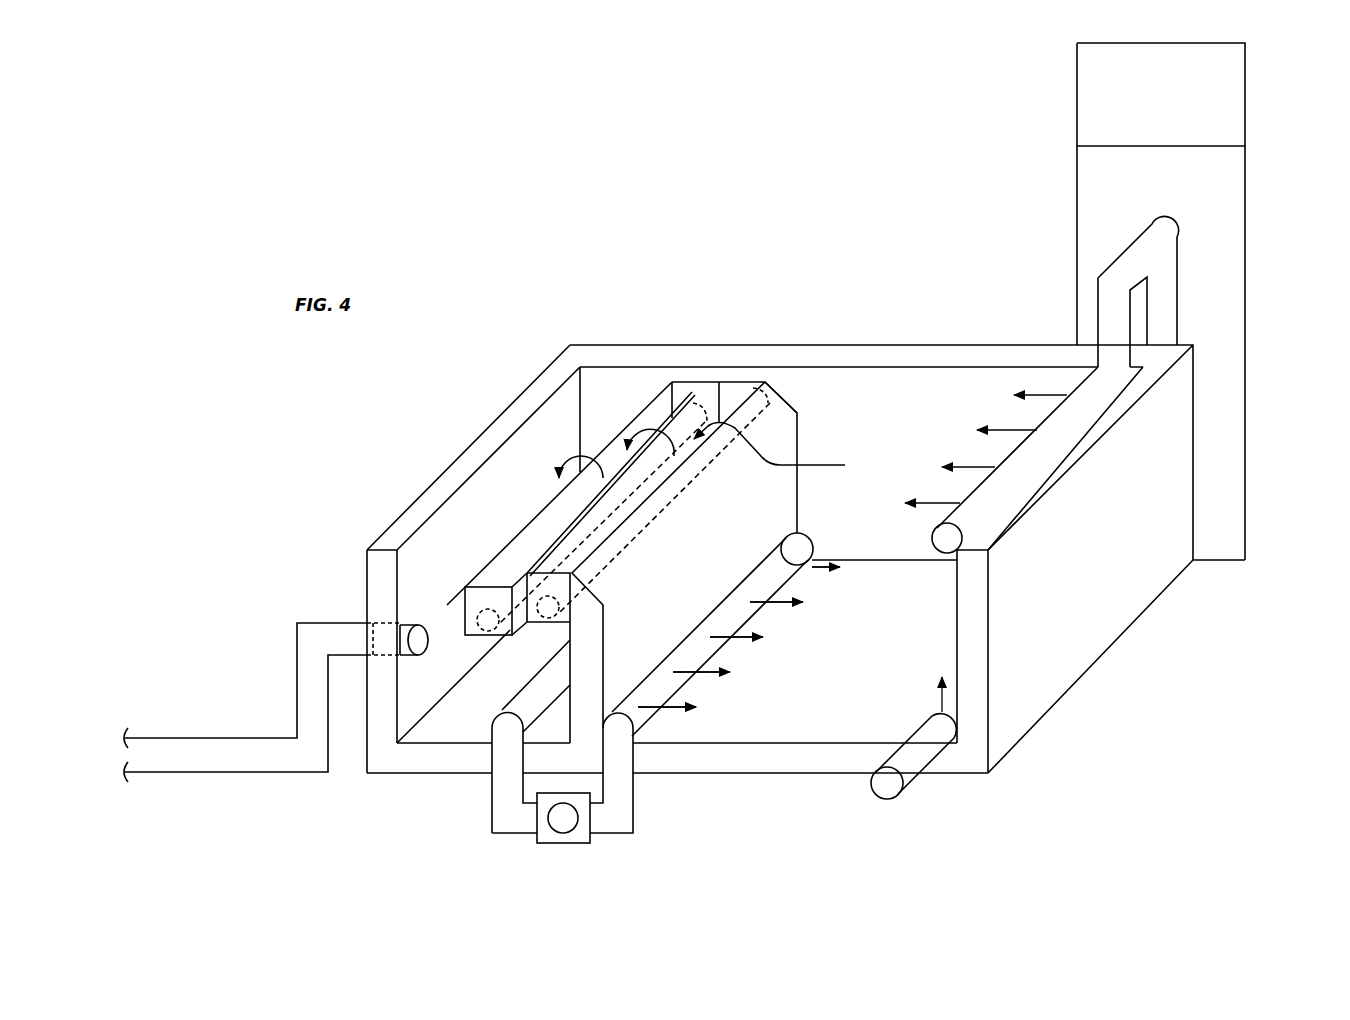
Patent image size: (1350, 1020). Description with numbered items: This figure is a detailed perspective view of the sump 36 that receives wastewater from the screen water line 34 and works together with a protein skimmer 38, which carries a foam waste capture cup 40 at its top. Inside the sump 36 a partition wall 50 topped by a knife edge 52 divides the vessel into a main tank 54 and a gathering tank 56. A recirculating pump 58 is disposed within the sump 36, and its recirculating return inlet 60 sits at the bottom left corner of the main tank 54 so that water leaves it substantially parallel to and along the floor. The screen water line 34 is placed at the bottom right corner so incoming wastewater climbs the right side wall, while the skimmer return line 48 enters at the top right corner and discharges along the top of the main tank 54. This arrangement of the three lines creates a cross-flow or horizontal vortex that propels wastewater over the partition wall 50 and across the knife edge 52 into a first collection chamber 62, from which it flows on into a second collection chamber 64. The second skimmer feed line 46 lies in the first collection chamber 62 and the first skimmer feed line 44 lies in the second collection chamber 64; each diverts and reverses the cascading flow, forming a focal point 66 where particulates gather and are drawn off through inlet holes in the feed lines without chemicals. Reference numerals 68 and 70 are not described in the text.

The screen water line 34 is at (887, 800).
The sump 36 is at (1095, 668).
The protein skimmer 38 is at (1257, 82).
The foam waste capture cup 40 is at (1173, 102).
The first skimmer feed line 44 is at (485, 609).
The second skimmer feed line 46 is at (548, 598).
The skimmer return line 48 is at (1113, 314).
The partition wall 50 is at (710, 576).
The knife edge 52 is at (694, 503).
The main tank 54 is at (810, 725).
The gathering tank 56 is at (442, 725).
The recirculating pump 58 is at (563, 843).
The recirculating return inlet 60 is at (645, 713).
The first collection chamber 62 is at (752, 372).
The second collection chamber 64 is at (654, 400).
The focal point 66 is at (740, 380).
The roller edge 68 is at (692, 380).
The inlet pipe 70 is at (203, 772).